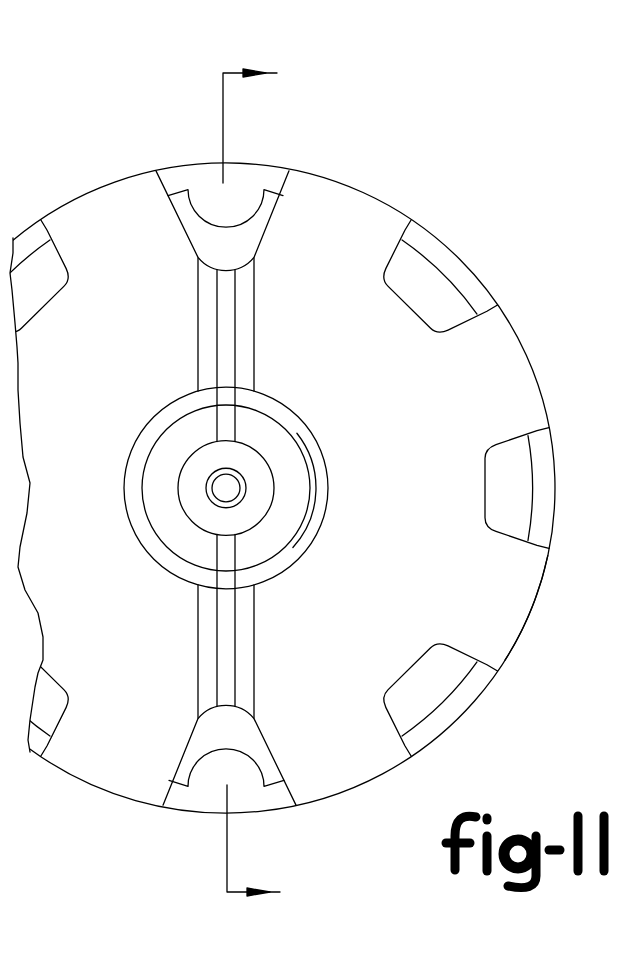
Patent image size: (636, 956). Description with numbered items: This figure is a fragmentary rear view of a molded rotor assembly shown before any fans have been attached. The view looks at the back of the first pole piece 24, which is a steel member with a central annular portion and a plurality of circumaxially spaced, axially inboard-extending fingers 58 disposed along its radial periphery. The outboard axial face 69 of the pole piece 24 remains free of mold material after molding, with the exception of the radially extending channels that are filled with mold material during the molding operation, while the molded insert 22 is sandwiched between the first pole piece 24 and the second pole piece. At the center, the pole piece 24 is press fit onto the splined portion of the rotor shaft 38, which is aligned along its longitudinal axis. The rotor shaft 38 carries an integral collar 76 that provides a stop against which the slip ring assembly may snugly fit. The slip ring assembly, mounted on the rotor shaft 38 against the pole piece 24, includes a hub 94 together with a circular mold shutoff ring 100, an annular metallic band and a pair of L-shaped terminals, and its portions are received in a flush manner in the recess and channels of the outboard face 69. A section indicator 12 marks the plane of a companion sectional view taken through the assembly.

The section line 12- 12 is at (273, 487).
The molded insert 22 is at (433, 278).
The first pole piece 24 is at (453, 390).
The rotor shaft 38 is at (240, 476).
The fingers 58 is at (388, 218).
The outboard axial face 69 is at (413, 597).
The integral collar 76 is at (272, 535).
The hub 94 is at (202, 510).
The circular mold shutoff ring 100 is at (272, 402).